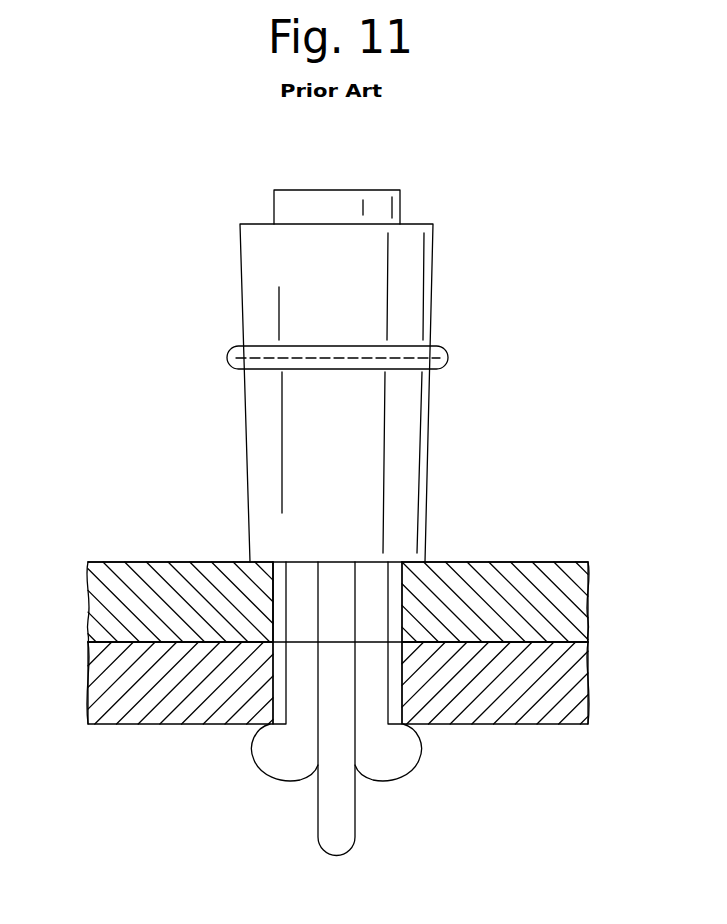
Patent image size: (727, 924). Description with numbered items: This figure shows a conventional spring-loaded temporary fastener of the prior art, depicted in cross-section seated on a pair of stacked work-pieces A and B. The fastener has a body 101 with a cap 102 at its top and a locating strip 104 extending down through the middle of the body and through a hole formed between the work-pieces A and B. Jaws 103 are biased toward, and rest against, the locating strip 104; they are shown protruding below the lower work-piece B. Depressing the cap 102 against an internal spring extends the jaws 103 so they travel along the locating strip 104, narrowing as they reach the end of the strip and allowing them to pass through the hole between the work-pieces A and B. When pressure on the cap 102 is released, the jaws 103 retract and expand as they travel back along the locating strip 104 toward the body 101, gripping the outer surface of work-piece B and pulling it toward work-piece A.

The body 101 is at (295, 450).
The cap 102 is at (308, 200).
The jaws 103 is at (282, 768).
The locating strip 104 is at (347, 817).
The work-piece A is at (145, 585).
The work-piece B is at (146, 687).